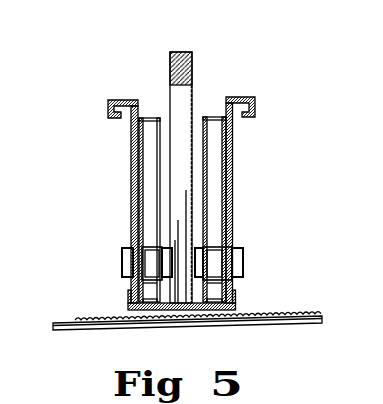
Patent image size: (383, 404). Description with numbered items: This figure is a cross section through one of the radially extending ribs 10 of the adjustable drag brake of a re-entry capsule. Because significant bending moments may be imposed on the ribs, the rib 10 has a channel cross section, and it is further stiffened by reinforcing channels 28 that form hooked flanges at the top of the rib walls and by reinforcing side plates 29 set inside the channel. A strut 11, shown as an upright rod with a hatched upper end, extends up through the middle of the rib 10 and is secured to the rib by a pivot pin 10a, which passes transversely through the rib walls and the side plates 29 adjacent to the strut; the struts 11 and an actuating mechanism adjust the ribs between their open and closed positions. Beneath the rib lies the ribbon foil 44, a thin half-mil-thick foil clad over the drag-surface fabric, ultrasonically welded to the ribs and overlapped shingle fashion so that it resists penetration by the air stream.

The rib 10 is at (230, 195).
The pivot pin 10a is at (243, 258).
The strut 11 is at (193, 88).
The reinforcing channel 28 is at (253, 101).
The reinforcing side plate 29 is at (207, 169).
The ribbon foil 44 is at (71, 331).